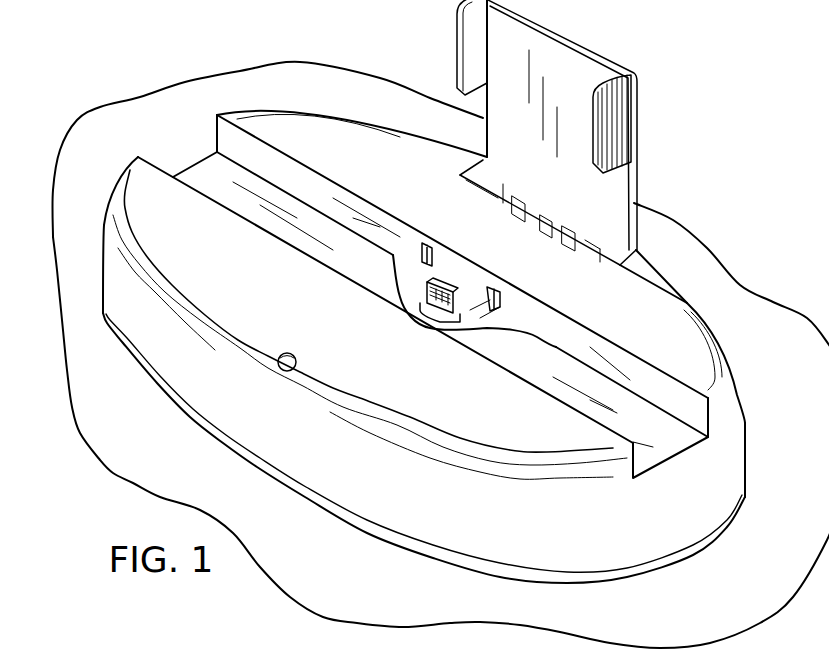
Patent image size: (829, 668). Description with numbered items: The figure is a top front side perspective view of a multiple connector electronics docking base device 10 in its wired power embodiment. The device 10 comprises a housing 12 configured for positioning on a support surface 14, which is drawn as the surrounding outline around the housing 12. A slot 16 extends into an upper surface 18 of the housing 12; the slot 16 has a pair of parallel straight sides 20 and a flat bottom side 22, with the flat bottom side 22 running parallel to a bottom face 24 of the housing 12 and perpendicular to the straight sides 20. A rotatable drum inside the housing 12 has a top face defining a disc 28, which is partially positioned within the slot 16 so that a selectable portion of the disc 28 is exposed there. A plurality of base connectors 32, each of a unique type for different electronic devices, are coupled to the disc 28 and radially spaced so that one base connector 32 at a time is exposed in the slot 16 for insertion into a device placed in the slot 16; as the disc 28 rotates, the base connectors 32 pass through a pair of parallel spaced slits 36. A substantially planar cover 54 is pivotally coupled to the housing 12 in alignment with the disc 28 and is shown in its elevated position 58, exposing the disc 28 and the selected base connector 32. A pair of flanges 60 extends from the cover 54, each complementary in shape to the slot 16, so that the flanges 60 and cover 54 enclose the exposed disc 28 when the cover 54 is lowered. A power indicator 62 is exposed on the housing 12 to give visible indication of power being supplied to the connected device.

The multiple connector electronics docking base device 10 is at (466, 318).
The housing 12 is at (466, 394).
The support surface 14 is at (150, 467).
The slot 16 is at (684, 431).
The upper surface 18 is at (605, 325).
The straight sides 20 is at (713, 407).
The flat bottom side 22 is at (745, 497).
The bottom face 24 is at (448, 573).
The disc 28 is at (547, 337).
The base connectors 32 is at (440, 310).
The slits 36 is at (422, 263).
The cover 54 is at (637, 175).
The elevated position 58 is at (662, 192).
The flanges 60 is at (460, 45).
The power indicator 62 is at (289, 354).